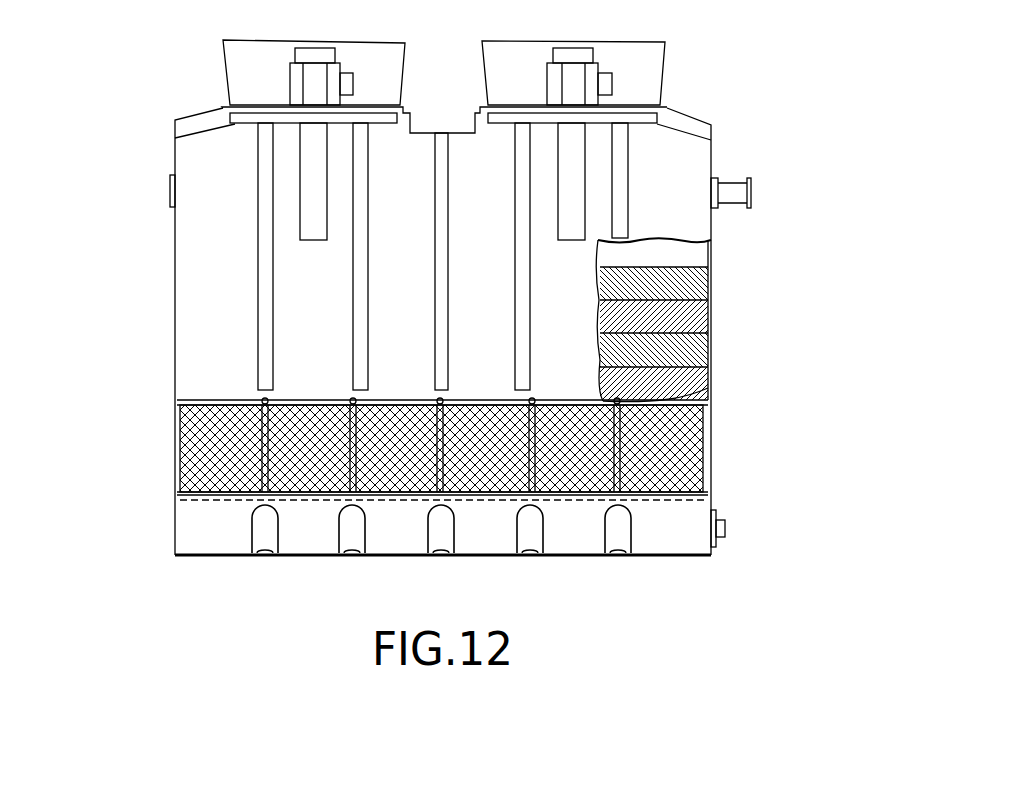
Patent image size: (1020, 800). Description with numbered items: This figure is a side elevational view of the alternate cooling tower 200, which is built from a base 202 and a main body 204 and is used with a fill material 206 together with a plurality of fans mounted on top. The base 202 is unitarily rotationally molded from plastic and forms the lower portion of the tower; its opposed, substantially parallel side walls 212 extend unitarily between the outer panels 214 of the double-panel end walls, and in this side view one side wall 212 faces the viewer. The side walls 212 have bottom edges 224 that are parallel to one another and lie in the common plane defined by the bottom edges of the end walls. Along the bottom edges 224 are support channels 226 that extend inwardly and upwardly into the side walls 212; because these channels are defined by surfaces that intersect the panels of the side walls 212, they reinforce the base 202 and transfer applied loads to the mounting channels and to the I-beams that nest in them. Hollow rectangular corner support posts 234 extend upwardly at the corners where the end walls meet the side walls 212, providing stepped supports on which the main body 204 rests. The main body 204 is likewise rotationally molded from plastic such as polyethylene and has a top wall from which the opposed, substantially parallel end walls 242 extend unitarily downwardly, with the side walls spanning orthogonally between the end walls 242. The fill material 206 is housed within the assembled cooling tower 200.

The cooling tower 200 is at (745, 96).
The base 202 is at (173, 450).
The main body 204 is at (171, 158).
The fill material 206 is at (707, 320).
The side walls 212 is at (215, 540).
The outer panel 214 is at (173, 507).
The bottom edges 224 is at (485, 557).
The support channels 226 is at (365, 523).
The corner support posts 234 is at (173, 418).
The end walls 242 is at (174, 236).